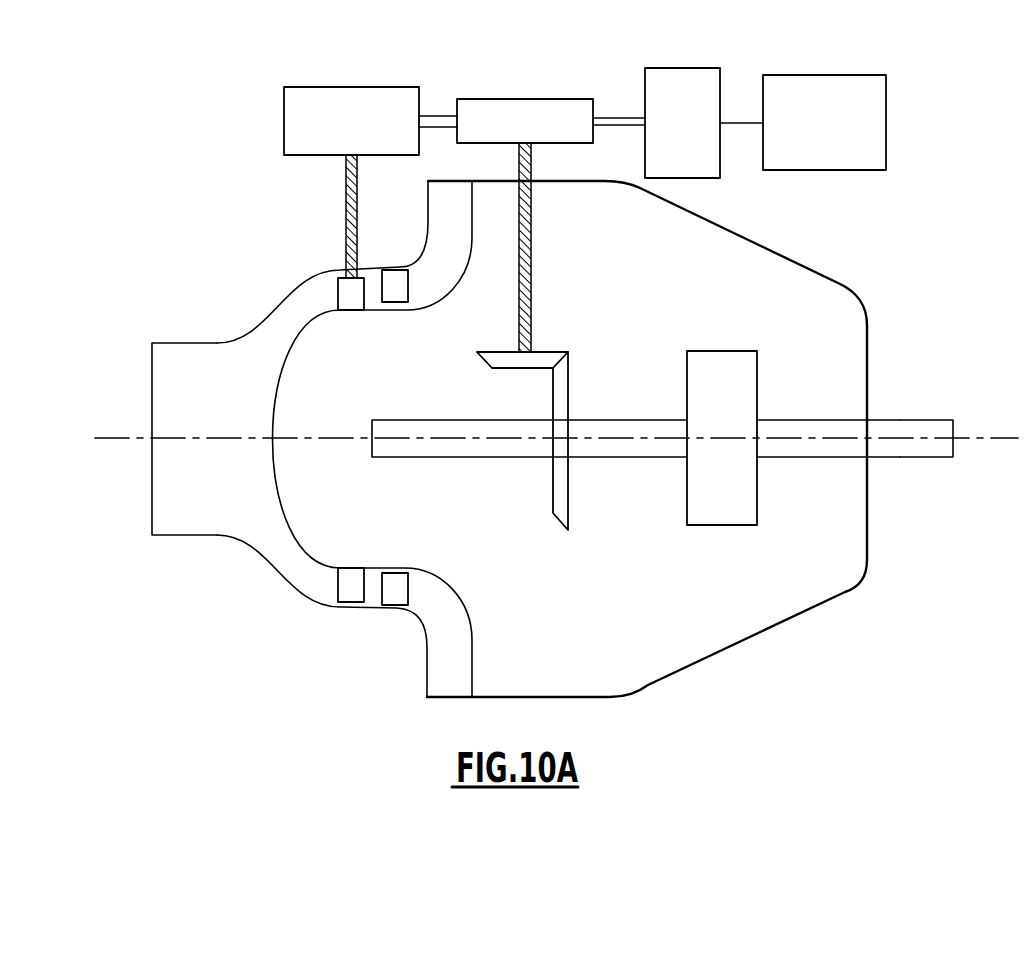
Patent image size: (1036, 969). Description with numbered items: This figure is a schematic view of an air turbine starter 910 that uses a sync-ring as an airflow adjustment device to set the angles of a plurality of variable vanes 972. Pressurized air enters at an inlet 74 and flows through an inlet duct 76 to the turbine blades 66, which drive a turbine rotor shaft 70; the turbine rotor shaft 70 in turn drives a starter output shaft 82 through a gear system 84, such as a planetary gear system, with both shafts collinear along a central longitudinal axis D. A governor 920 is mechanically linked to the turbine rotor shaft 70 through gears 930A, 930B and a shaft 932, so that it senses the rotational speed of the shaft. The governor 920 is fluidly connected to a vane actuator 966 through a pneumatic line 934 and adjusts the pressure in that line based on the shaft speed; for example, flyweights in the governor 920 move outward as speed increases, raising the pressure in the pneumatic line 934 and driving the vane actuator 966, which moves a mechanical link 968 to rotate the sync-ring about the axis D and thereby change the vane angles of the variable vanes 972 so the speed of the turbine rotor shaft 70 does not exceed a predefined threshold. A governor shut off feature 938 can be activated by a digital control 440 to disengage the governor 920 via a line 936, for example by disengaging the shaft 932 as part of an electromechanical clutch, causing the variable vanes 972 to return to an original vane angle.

The inlet 74 is at (122, 389).
The inlet duct 76 is at (258, 530).
The turbine blades 66 is at (394, 276).
The turbine rotor shaft 70 is at (610, 427).
The starter output shaft 82 is at (935, 425).
The gear system 84 is at (725, 355).
The air turbine starter 910 is at (750, 670).
The governor 920 is at (532, 99).
The gear 930A is at (569, 375).
The gear 930B is at (553, 352).
The shaft 932 is at (533, 252).
The pneumatic line 934 is at (440, 100).
The line 936 is at (612, 127).
The governor shut off feature 938 is at (708, 178).
The digital control 440 is at (832, 170).
The vane actuator 966 is at (338, 87).
The mechanical link 968 is at (343, 196).
The variable vanes 972 is at (355, 303).
The central longitudinal axis D is at (997, 440).